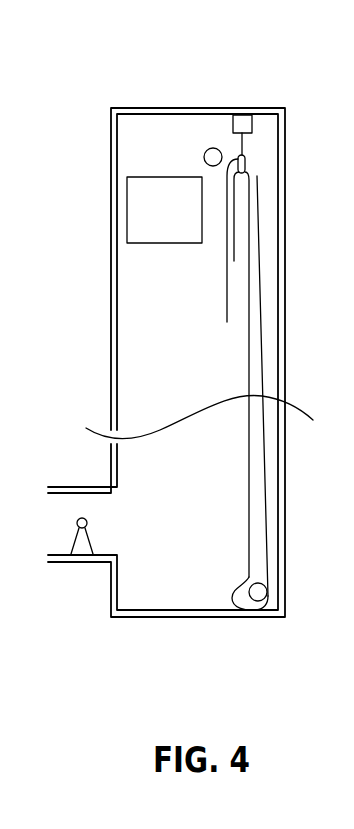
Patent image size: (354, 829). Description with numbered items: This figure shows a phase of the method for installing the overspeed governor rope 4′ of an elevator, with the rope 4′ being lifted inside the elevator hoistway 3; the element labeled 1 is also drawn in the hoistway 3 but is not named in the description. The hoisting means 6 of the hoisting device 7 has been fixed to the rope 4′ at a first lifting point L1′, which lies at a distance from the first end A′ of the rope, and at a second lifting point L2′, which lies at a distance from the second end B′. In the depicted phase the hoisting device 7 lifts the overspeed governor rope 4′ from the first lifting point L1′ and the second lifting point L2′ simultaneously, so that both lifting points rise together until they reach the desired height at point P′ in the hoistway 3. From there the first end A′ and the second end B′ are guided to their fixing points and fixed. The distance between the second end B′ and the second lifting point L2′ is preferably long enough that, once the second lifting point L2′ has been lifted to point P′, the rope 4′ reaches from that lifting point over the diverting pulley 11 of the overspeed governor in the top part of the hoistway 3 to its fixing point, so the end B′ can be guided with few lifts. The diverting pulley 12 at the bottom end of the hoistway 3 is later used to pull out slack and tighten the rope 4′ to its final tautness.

The control unit 1 is at (145, 219).
The elevator hoistway 3 is at (145, 303).
The overspeed governor rope 4′ is at (262, 364).
The hoisting means 6 is at (247, 137).
The hoisting device 7 is at (243, 115).
The diverting pulley of the overspeed governor 11 is at (213, 148).
The diverting pulley 12 is at (258, 592).
The point P′ is at (230, 164).
The first lifting point L1′ is at (257, 175).
The second lifting point L2′ is at (247, 160).
The first end A′ is at (241, 262).
The second end B′ is at (233, 322).